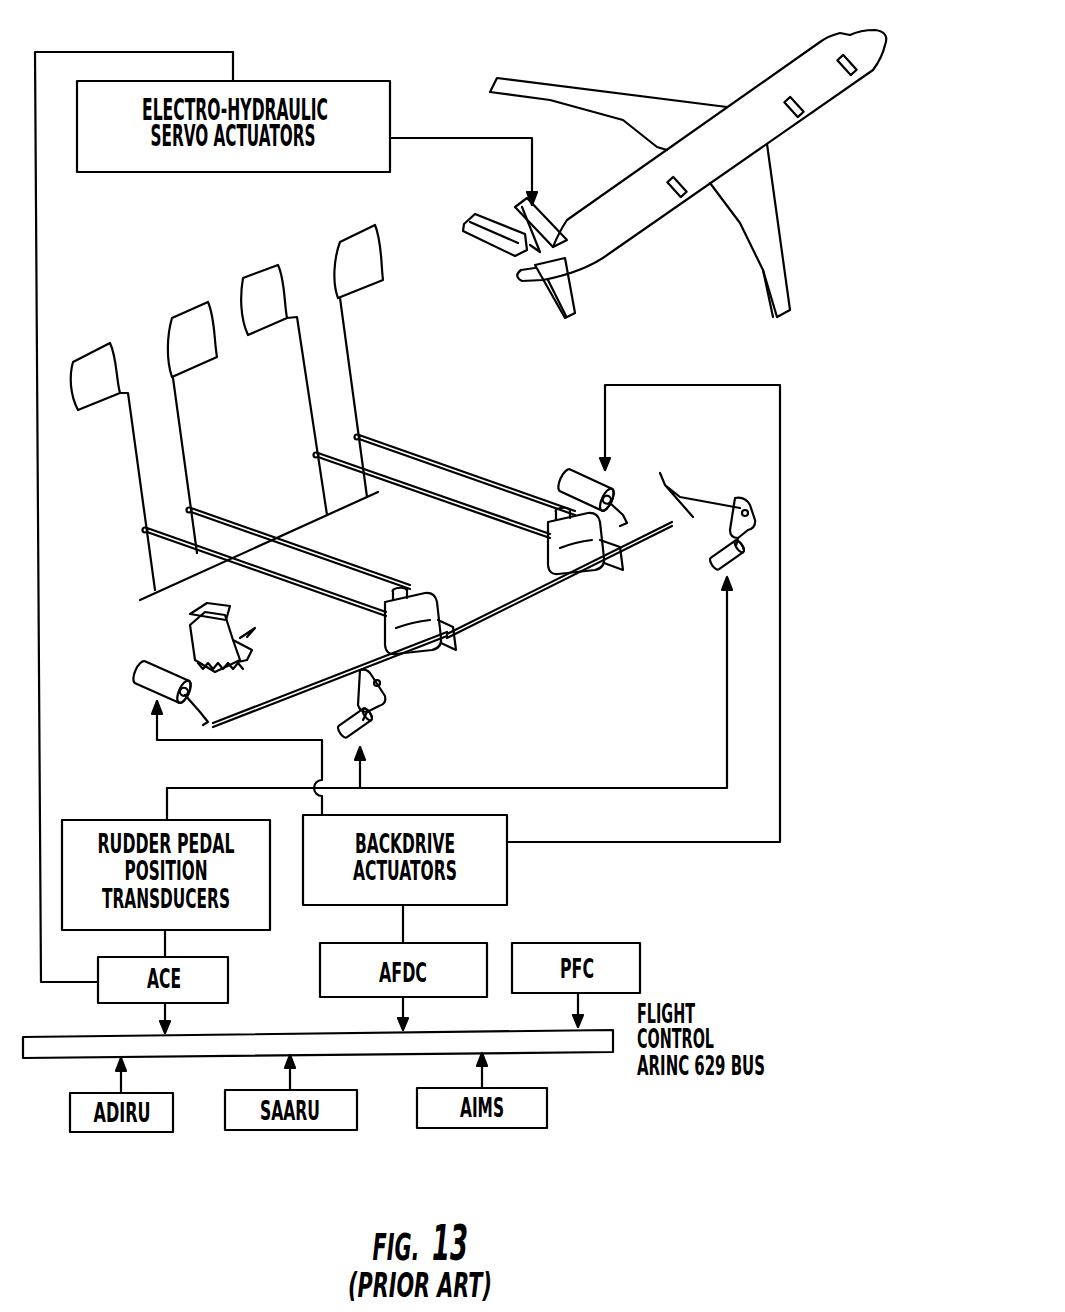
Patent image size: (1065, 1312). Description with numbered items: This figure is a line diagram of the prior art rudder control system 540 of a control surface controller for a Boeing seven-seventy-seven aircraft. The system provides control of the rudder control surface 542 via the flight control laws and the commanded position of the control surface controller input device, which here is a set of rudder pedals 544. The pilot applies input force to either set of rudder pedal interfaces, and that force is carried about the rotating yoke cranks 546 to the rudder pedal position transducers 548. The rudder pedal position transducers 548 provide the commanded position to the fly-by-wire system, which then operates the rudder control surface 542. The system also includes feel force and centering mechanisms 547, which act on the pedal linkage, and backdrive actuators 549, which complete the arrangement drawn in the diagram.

The rudder control system 540 is at (825, 378).
The rudder control surface 542 is at (508, 238).
The rudder pedals 544 is at (110, 343).
The rotating yoke cranks 546 is at (432, 596).
The feel force and centering mechanisms 547 is at (247, 634).
The rudder pedal position transducers 548 is at (368, 738).
The backdrive actuators 549 is at (140, 669).